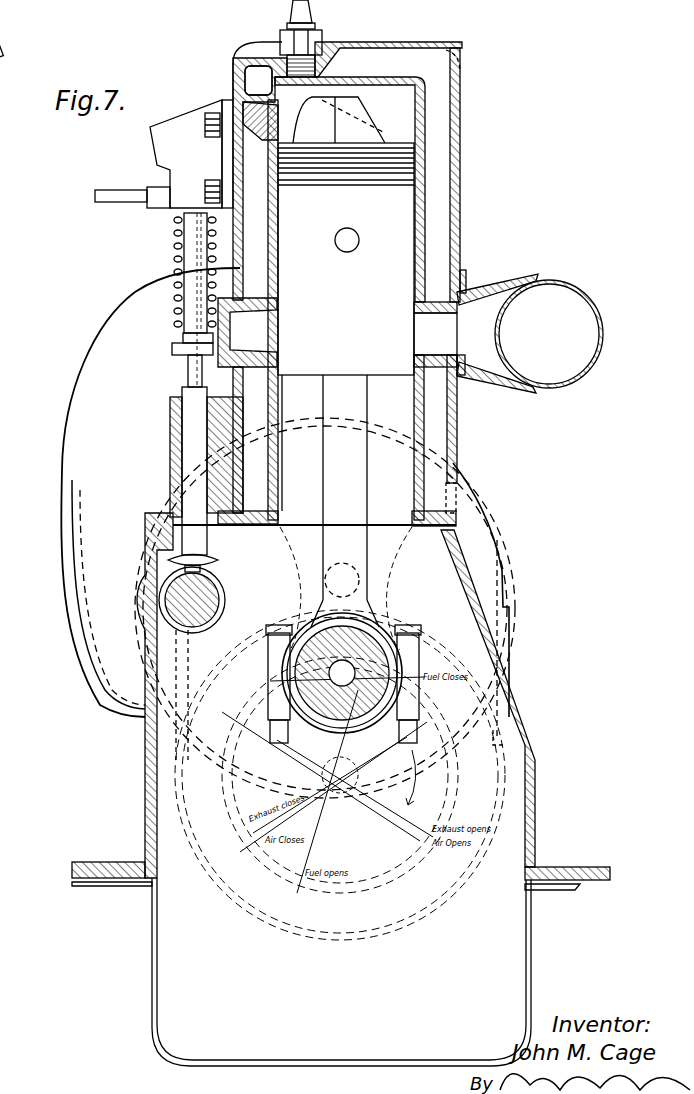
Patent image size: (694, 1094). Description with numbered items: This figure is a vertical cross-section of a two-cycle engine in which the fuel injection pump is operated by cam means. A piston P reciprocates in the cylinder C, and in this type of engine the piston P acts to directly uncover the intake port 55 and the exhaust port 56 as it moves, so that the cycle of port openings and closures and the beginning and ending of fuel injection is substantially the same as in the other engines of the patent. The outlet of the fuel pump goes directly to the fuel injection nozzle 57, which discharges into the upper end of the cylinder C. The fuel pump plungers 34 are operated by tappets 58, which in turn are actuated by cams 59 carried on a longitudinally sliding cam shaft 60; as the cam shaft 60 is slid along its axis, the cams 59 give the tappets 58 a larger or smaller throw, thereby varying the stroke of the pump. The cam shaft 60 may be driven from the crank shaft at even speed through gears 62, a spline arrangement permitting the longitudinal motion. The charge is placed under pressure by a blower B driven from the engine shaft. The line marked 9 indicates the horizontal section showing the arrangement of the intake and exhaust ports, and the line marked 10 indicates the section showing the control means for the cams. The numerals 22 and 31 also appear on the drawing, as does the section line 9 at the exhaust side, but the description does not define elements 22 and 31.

The crankcase housing 22 is at (64, 458).
The fuel injection pump 31 is at (177, 129).
The fuel pump plunger 34 is at (188, 368).
The intake port 55 is at (268, 331).
The exhaust port 56 is at (508, 333).
The fuel injection nozzle 57 is at (258, 95).
The tappet 58 is at (188, 462).
The cam 59 is at (210, 582).
The cam shaft 60 is at (205, 608).
The gears 62 is at (114, 693).
The section line 9— 9 is at (248, 312).
The section line 10— 10 is at (197, 437).
The cylinder C is at (428, 163).
The piston P is at (346, 236).
The blower B is at (360, 575).